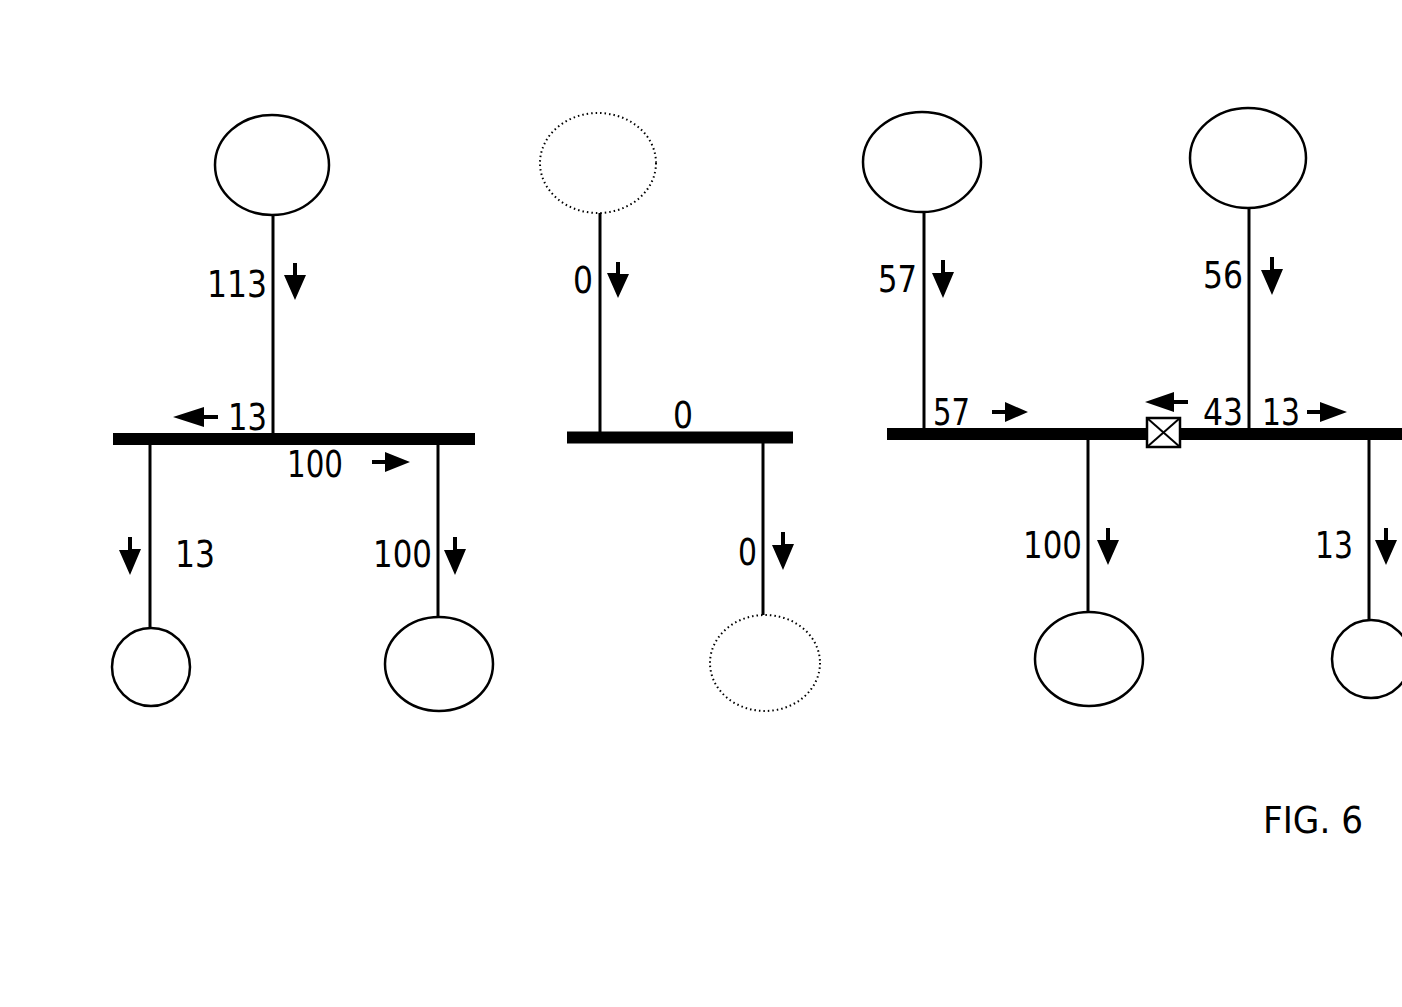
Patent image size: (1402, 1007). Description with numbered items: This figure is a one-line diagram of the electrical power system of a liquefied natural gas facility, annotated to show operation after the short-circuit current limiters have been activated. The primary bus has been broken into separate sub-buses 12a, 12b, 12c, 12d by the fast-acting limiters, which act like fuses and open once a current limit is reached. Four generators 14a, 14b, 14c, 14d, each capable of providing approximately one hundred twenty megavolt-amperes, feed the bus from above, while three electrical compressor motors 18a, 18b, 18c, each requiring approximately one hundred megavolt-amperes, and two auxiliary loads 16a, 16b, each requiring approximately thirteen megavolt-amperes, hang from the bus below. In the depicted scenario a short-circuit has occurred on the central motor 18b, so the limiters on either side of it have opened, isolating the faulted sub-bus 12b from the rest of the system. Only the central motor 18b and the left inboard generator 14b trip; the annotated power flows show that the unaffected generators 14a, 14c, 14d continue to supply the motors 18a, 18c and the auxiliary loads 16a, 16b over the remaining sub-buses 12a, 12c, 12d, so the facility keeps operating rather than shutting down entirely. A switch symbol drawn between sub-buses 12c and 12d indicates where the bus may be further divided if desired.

The generator 14a is at (227, 146).
The left inboard generator 14b is at (558, 143).
The generator 14c is at (883, 138).
The generator 14d is at (1213, 145).
The sub-bus 12a is at (338, 433).
The sub-bus 12b is at (677, 443).
The sub-bus 12c is at (992, 440).
The sub-bus 12d is at (1280, 438).
The auxiliary load 16a is at (173, 685).
The auxiliary load 16b is at (1355, 677).
The motor 18a is at (432, 698).
The central motor 18b is at (753, 698).
The motor 18c is at (1088, 697).